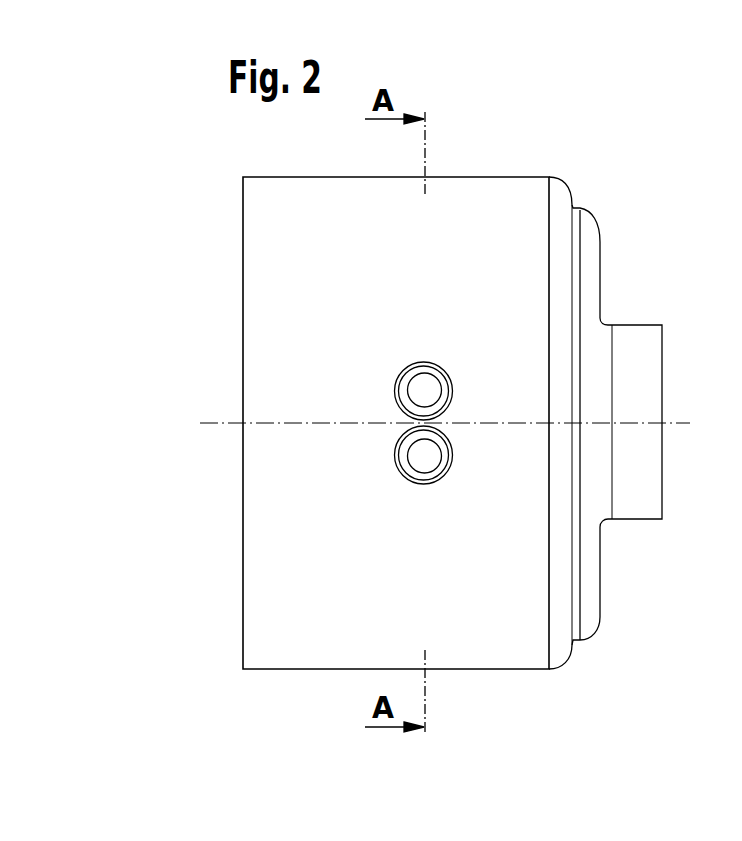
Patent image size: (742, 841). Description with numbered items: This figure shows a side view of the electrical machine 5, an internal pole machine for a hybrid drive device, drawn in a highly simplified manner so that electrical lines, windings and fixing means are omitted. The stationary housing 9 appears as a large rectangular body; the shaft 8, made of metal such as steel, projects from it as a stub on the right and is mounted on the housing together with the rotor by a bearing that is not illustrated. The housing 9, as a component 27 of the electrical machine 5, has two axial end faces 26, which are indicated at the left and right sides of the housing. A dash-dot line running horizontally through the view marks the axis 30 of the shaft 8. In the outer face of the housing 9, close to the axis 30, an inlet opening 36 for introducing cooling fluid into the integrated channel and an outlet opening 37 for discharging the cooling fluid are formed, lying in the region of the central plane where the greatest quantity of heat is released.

The electrical machine 5 is at (579, 694).
The shaft 8 is at (642, 470).
The housing 9 is at (396, 423).
The component 27 is at (345, 632).
The axial end face 26 is at (243, 262).
The axis 30 is at (205, 422).
The inlet opening 36 is at (430, 458).
The outlet opening 37 is at (430, 392).